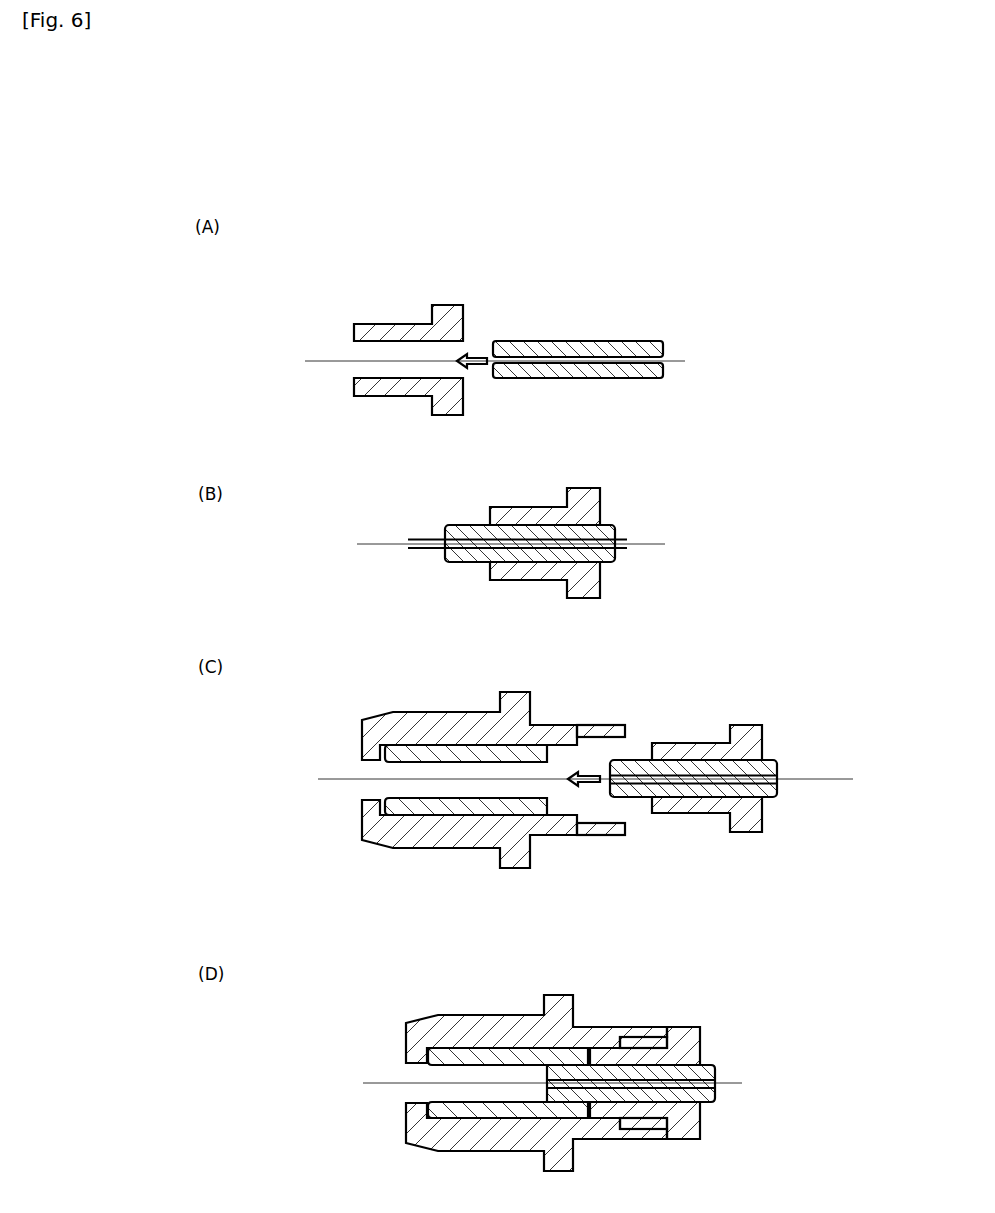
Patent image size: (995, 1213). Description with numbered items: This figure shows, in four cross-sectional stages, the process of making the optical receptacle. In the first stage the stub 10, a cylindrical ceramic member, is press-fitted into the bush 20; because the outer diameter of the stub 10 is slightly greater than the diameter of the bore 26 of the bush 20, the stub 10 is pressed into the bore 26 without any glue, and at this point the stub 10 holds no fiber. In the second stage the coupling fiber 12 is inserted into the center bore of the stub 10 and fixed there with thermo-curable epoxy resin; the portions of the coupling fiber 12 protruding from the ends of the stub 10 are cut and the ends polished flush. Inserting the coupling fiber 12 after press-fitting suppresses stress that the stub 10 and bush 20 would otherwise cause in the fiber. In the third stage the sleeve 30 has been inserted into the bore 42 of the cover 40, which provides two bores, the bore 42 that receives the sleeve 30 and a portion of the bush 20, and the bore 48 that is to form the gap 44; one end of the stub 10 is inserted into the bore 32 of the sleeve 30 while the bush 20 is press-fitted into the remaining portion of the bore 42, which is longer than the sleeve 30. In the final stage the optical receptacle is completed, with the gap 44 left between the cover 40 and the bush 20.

The stub 10 is at (638, 338).
The coupling fiber 12 is at (627, 539).
The bush 20 is at (408, 322).
The bore 26 is at (360, 353).
The sleeve 30 is at (403, 750).
The bore 32 is at (433, 770).
The cover 40 is at (470, 720).
The bore 42 is at (560, 757).
The gap 44 is at (643, 1042).
The bore 48 is at (597, 738).